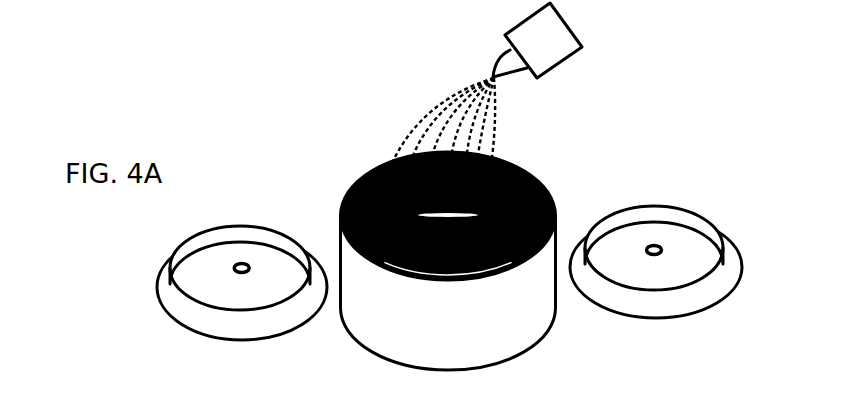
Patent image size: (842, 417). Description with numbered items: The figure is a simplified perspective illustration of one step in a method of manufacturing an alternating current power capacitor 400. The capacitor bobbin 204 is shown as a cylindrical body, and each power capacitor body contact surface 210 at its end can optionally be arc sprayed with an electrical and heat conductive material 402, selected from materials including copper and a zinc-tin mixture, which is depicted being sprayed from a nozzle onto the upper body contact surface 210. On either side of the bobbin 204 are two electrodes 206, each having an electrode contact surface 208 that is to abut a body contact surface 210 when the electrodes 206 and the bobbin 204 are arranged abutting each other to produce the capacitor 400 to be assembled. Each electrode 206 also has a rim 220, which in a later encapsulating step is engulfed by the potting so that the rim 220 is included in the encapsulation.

The power capacitor 400 is at (306, 139).
The electrical and heat conductive material 402 is at (437, 82).
The capacitor bobbin 204 is at (498, 332).
The electrode 206 is at (255, 225).
The electrode contact surface 208 is at (212, 343).
The power capacitor body contact surface 210 is at (535, 180).
The electrode rim 220 is at (157, 287).